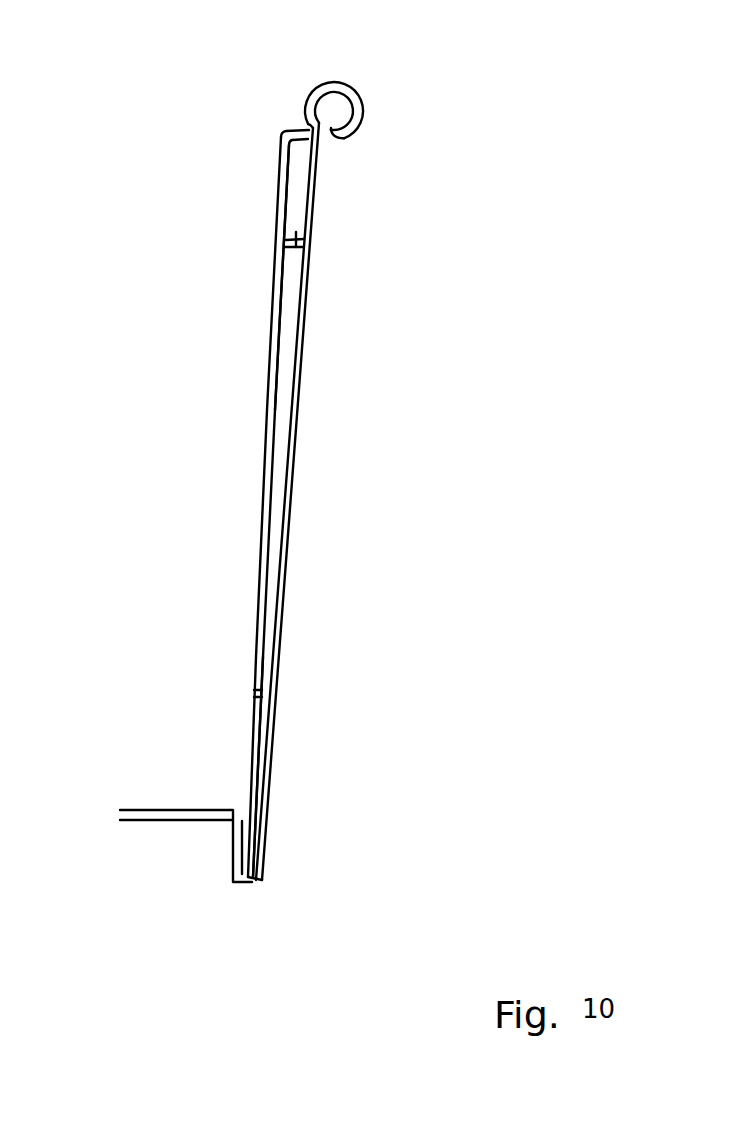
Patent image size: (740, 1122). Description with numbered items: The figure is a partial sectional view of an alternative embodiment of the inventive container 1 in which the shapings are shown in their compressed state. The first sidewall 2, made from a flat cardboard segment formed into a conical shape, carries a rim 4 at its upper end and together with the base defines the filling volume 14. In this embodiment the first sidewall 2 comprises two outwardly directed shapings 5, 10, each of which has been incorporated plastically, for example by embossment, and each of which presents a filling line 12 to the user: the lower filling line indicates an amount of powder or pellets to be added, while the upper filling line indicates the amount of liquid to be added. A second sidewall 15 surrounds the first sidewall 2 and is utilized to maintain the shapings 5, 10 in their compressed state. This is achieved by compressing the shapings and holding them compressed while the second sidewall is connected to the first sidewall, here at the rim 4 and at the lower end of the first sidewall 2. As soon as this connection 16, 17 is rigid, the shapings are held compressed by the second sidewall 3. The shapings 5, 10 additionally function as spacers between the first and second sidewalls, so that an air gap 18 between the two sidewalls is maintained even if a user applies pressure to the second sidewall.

The container 1 is at (417, 72).
The first sidewall 2 is at (266, 456).
The second sidewall 3 is at (158, 815).
The rim 4 is at (325, 67).
The shaping 5 is at (307, 228).
The shaping 10 is at (276, 683).
The filling line 12 is at (250, 241).
The filling volume 14 is at (102, 457).
The second sidewall 15 is at (295, 428).
The connection 16 is at (310, 126).
The connection 17 is at (248, 883).
The air gap 18 is at (287, 358).